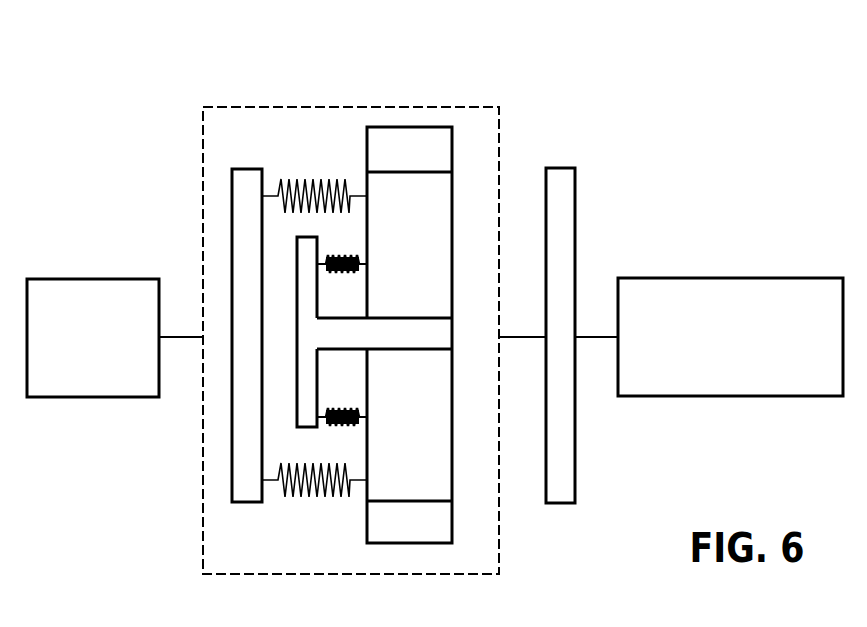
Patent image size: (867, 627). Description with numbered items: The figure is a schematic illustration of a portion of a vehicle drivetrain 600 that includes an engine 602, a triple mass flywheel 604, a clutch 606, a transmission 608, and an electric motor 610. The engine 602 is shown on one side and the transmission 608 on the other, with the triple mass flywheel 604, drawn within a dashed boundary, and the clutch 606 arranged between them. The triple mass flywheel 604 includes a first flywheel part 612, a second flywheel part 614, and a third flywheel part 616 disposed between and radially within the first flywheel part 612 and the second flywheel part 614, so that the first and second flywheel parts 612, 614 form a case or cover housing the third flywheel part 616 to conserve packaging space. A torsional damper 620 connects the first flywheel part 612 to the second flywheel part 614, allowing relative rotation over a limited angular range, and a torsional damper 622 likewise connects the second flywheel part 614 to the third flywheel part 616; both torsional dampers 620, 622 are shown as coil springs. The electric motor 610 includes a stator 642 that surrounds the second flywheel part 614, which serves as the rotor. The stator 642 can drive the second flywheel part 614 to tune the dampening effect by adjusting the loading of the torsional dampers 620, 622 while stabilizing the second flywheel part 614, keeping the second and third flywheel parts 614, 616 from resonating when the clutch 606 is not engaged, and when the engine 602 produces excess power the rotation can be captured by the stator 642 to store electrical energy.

The vehicle drivetrain 600 is at (712, 158).
The engine 602 is at (83, 279).
The triple mass flywheel 604 is at (499, 107).
The clutch 606 is at (565, 186).
The transmission 608 is at (768, 278).
The electric motor 610 is at (407, 127).
The first flywheel part 612 is at (232, 470).
The second flywheel part 614 is at (397, 172).
The third flywheel part 616 is at (297, 307).
The torsional damper 620 is at (310, 178).
The torsional damper 622 is at (350, 253).
The stator 642 is at (452, 145).